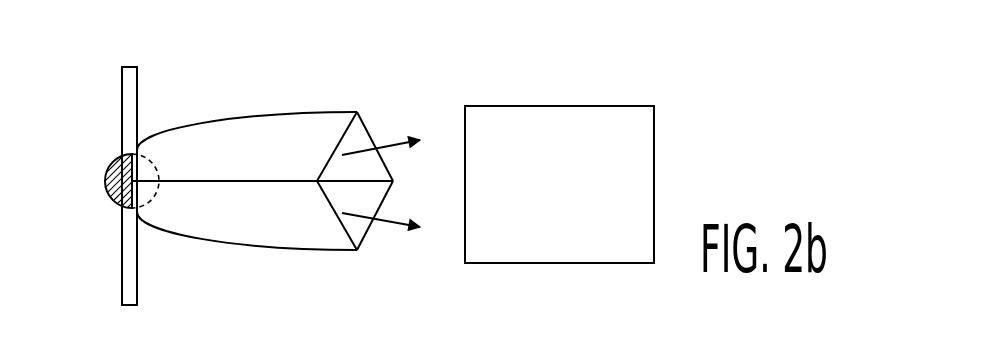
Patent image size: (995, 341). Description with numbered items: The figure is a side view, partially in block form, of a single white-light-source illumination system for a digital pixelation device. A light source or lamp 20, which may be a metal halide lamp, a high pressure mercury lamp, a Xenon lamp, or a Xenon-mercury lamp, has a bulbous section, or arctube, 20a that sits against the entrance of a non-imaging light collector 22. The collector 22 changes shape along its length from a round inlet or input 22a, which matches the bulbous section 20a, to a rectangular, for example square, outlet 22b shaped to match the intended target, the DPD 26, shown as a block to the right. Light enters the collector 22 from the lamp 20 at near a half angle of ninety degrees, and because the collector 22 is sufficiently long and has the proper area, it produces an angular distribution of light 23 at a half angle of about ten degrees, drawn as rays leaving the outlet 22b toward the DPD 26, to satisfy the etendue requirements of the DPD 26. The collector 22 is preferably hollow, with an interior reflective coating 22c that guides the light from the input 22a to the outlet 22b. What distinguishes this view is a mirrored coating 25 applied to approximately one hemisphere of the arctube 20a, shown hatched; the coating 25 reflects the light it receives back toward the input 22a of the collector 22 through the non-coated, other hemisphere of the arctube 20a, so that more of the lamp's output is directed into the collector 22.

The light source or lamp 20 is at (113, 65).
The bulbous section or arctube 20a is at (102, 156).
The mirrored coating 25 is at (107, 188).
The non-imaging light collector 22 is at (238, 137).
The round inlet or input 22a is at (127, 154).
The rectangular outlet 22b is at (343, 119).
The interior reflective coating 22c is at (358, 228).
The angular distribution of light 23 is at (400, 213).
The digital pixelation device (DPD) 26 is at (573, 199).